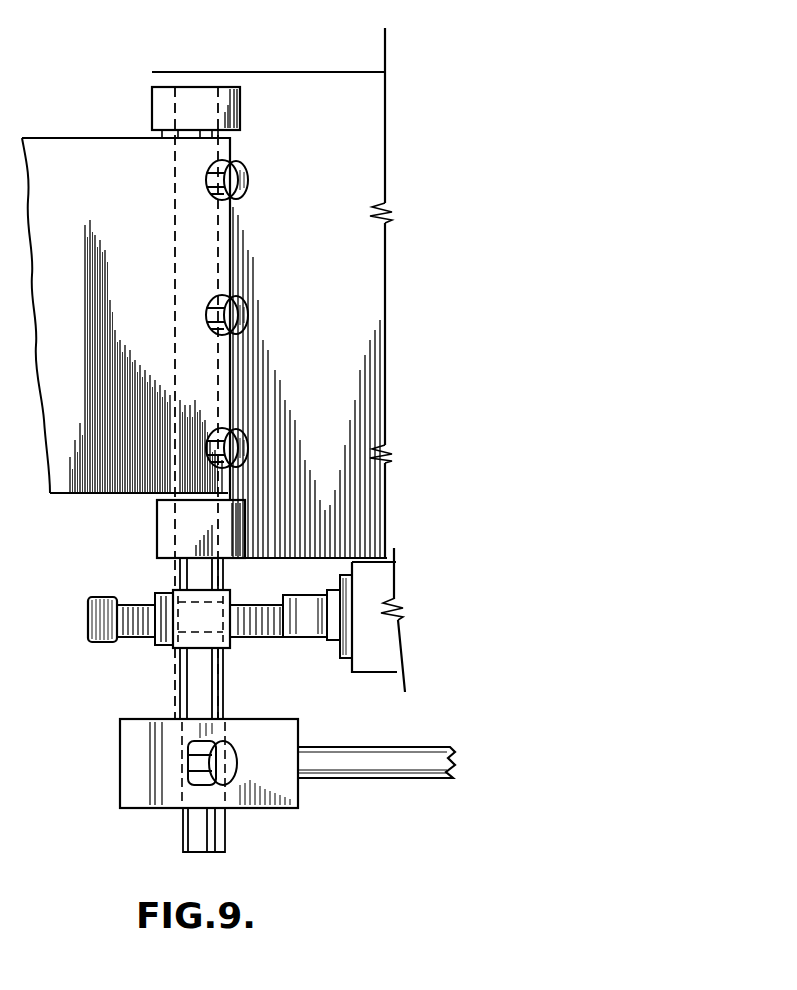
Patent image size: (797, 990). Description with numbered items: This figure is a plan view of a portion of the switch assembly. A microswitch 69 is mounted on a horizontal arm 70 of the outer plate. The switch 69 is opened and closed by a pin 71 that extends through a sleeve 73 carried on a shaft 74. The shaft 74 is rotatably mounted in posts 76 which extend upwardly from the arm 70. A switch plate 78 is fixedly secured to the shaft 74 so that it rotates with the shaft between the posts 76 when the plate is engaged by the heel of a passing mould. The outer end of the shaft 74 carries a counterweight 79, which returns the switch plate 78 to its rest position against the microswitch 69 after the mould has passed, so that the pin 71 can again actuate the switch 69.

The microswitch 69 is at (380, 603).
The horizontal arm 70 is at (374, 295).
The pin 71 is at (145, 633).
The sleeve 73 is at (225, 648).
The shaft 74 is at (220, 708).
The posts 76 is at (152, 108).
The switch plate 78 is at (112, 197).
The counterweight 79 is at (387, 762).